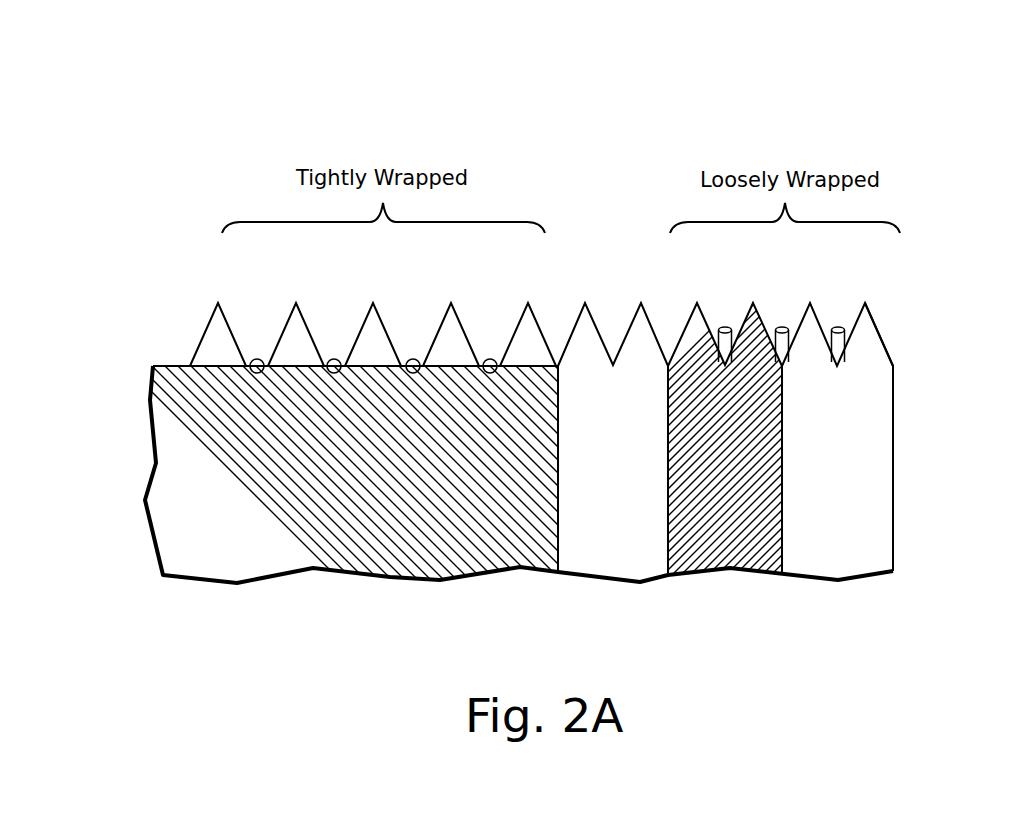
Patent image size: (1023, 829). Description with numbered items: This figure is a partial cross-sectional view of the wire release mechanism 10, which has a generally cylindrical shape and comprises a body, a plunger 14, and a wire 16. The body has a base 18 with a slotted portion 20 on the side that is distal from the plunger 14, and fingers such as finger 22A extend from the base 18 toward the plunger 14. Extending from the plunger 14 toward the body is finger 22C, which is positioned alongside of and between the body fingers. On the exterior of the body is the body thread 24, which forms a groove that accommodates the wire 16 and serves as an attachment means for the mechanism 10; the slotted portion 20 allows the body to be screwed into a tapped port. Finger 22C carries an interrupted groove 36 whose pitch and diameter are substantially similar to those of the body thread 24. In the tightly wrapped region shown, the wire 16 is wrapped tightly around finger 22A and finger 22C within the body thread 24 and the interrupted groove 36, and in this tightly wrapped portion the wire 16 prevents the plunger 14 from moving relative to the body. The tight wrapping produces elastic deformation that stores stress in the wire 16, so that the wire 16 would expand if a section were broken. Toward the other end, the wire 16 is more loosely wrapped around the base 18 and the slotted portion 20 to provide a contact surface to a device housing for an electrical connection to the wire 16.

The wire release mechanism 10 is at (852, 113).
The plunger 14 is at (168, 416).
The wire 16 is at (414, 358).
The base 18 is at (743, 527).
The slotted portion 20 is at (845, 530).
The finger 22A is at (612, 513).
The finger 22C is at (293, 513).
The body thread 24 is at (877, 325).
The interrupted groove 36 is at (256, 368).